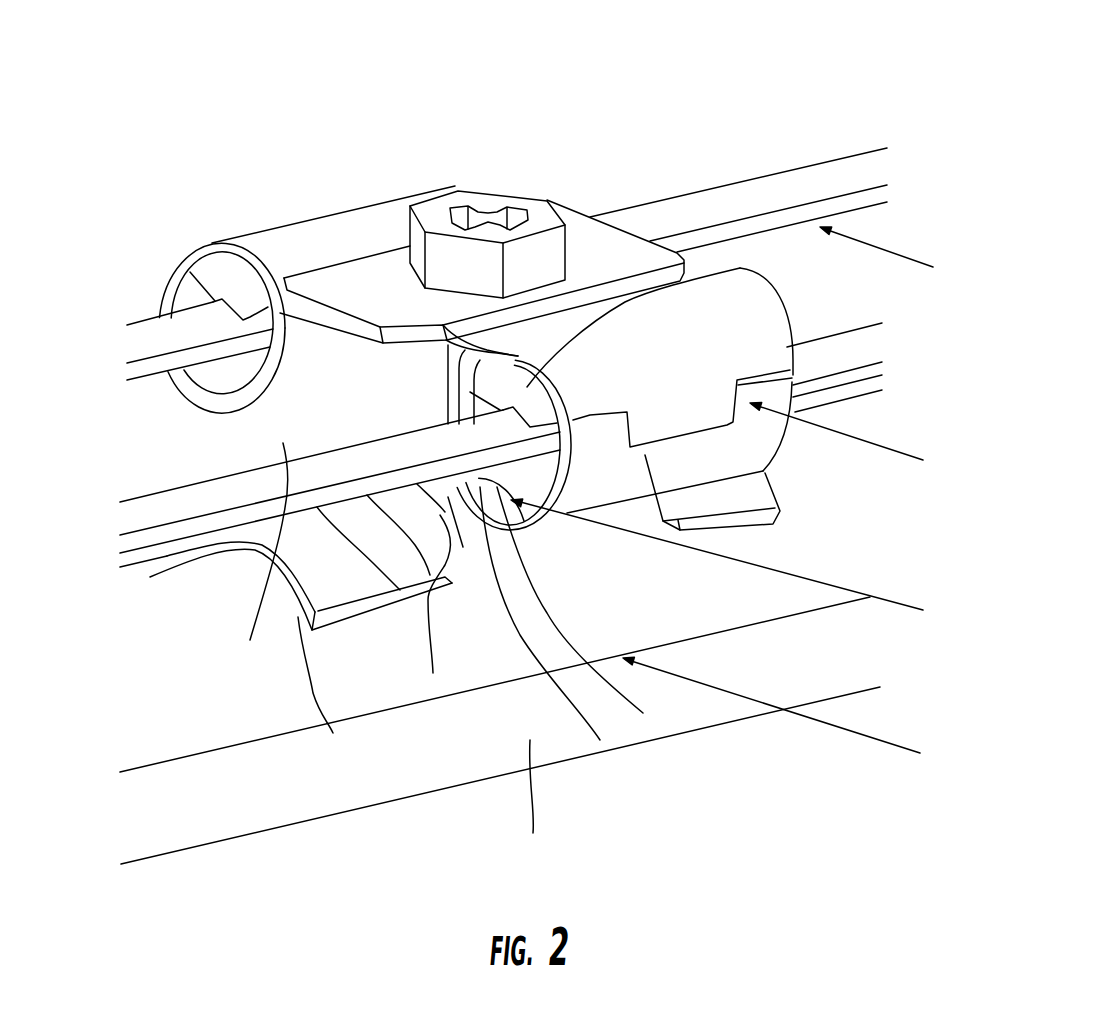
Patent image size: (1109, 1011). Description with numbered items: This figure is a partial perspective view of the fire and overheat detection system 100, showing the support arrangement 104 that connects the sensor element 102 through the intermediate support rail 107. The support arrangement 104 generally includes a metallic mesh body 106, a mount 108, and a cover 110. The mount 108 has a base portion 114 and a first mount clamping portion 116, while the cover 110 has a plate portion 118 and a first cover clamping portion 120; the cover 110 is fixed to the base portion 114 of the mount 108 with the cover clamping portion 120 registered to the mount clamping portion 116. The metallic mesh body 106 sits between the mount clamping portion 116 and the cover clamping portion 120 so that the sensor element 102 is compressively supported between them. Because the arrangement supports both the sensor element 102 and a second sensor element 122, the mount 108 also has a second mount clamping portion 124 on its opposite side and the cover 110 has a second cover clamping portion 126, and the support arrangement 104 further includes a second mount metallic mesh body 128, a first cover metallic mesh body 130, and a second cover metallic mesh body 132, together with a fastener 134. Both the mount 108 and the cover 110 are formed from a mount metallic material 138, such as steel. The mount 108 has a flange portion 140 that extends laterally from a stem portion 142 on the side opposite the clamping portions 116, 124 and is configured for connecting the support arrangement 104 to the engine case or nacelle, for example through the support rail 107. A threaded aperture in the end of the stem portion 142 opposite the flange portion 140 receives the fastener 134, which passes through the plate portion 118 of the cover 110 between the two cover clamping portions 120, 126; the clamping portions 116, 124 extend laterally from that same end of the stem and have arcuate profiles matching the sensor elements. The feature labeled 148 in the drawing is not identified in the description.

The fire and overheat detection system 100 is at (141, 896).
The sensor element 102 is at (170, 521).
The support arrangement 104 is at (77, 483).
The metallic mesh body 106 is at (600, 740).
The support rail 107 is at (533, 833).
The mount 108 is at (302, 700).
The cover 110 is at (582, 182).
The base portion 114 is at (433, 673).
The mount clamping portion 116 is at (643, 713).
The plate portion 118 is at (632, 205).
The cover clamping portion 120 is at (730, 523).
The second sensor element 122 is at (133, 320).
The second mount clamping portion 124 is at (210, 410).
The second cover clamping portion 126 is at (210, 240).
The second mount metallic mesh body 128 is at (233, 395).
The first cover metallic mesh body 130 is at (697, 302).
The second cover metallic mesh body 132 is at (233, 283).
The fastener 134 is at (450, 190).
The mount metallic material 138 is at (393, 190).
The flange portion 140 is at (333, 733).
The stem portion 142 is at (250, 640).
The mounting plate 148 is at (597, 227).